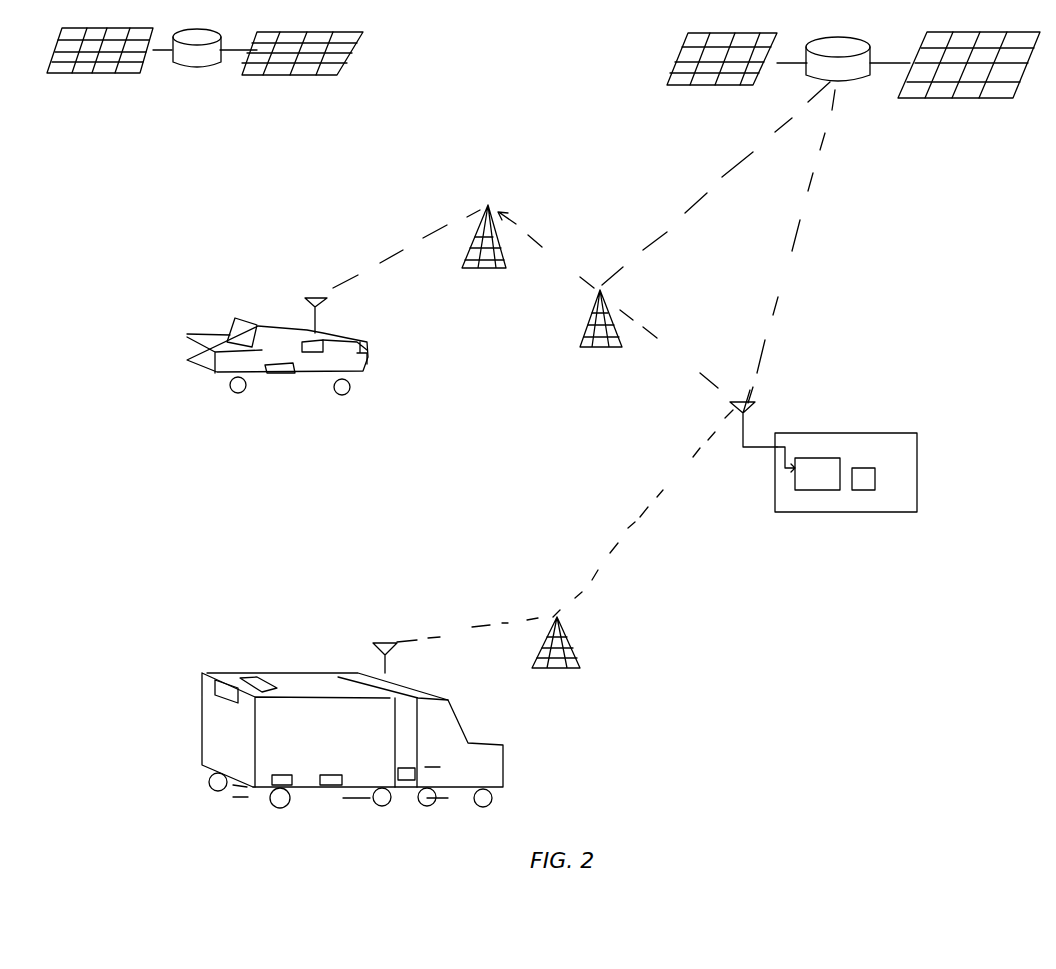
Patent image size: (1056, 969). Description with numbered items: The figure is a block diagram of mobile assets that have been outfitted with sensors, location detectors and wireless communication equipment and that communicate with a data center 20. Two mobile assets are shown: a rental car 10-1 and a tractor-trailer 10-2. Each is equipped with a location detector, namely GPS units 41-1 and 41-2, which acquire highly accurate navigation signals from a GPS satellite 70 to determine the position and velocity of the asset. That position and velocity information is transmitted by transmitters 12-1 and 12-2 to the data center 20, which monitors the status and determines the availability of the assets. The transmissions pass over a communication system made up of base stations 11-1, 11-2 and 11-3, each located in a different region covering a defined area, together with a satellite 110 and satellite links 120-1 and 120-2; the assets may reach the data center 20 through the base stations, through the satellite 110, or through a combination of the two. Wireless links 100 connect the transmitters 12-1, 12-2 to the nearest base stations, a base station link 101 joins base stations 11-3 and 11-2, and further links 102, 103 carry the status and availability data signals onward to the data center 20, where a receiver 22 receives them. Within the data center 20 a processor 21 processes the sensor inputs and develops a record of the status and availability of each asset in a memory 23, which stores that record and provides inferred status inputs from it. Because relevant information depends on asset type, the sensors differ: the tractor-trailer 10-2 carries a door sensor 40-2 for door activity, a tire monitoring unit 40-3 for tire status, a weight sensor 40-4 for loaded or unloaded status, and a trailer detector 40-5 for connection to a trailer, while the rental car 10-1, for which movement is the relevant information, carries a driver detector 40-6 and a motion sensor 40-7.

The GPS satellite 70 is at (213, 66).
The satellite 110 is at (847, 87).
The satellite link 120-1 is at (722, 177).
The satellite link 120-2 is at (800, 220).
The base station 11-1 is at (573, 638).
The base station 11-2 is at (607, 307).
The base station 11-3 is at (502, 215).
The radio communication link between vehicle and base station 100 is at (388, 257).
The base station link 101 is at (557, 257).
The status and availability data signals 102 is at (672, 353).
The communication link between base station and control center 103 is at (675, 477).
The receiver 22 is at (755, 402).
The data center 20 is at (873, 502).
The processor 21 is at (820, 490).
The memory 23 is at (860, 490).
The rental car 10-1 is at (287, 341).
The tractor-trailer 10-2 is at (356, 710).
The transmitter 12-1 is at (307, 298).
The transmitter 12-2 is at (377, 635).
The location detector 41-1 is at (257, 313).
The location detector 41-2 is at (255, 678).
The door sensor 40-2 is at (215, 690).
The tire monitoring unit 40-3 is at (292, 785).
The weight sensor 40-4 is at (330, 785).
The trailer detector 40-5 is at (408, 780).
The driver detector 40-6 is at (327, 352).
The motion sensor 40-7 is at (277, 375).